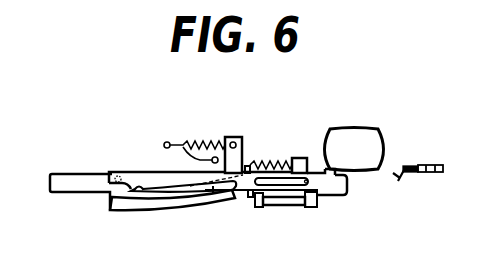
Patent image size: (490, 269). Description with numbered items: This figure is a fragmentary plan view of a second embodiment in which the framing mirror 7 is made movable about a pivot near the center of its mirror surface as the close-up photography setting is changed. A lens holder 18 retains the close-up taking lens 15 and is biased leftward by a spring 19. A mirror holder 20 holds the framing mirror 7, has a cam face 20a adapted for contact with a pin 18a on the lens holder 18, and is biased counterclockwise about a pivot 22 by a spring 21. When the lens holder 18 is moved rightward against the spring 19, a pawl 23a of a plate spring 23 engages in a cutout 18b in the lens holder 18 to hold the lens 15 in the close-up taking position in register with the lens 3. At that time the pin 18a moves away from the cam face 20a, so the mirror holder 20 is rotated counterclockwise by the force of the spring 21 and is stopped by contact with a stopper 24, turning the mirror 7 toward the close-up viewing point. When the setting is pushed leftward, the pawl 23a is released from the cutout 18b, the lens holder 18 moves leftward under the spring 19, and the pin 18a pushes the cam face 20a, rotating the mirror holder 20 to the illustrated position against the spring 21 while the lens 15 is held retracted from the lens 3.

The lens 3 is at (365, 134).
The framing mirror 7 is at (212, 199).
The close-up taking lens 15 is at (280, 207).
The lens holder 18 is at (338, 197).
The pin 18a is at (116, 176).
The cutout 18b is at (330, 173).
The spring 19 is at (274, 158).
The mirror holder 20 is at (243, 143).
The cam face 20a is at (139, 192).
The spring 21 is at (200, 138).
The pivot 22 is at (58, 194).
The plate spring 23 is at (408, 165).
The pawl 23a is at (398, 183).
The stopper 24 is at (186, 136).